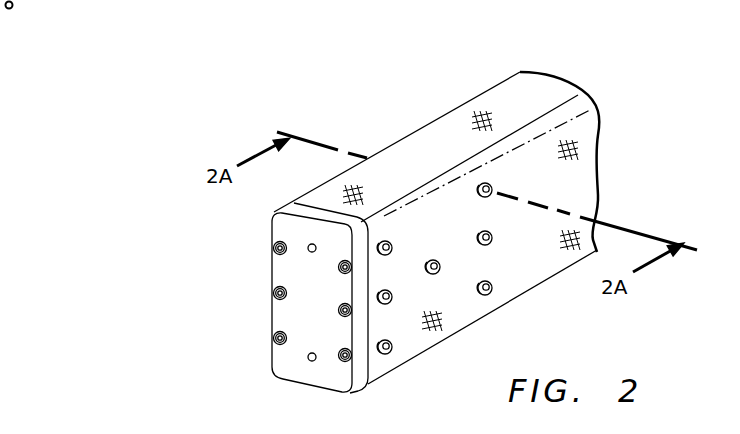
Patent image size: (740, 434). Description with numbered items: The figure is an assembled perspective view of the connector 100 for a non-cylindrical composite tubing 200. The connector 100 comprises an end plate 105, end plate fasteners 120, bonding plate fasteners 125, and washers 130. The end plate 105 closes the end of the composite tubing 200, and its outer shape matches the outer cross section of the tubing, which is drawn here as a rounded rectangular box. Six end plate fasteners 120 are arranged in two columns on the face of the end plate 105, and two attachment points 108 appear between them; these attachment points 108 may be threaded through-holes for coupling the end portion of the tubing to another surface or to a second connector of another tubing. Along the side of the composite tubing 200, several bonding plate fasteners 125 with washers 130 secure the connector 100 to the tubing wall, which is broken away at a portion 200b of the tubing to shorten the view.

The connector 100 is at (192, 220).
The end plate 105 is at (268, 276).
The attachment points 108 is at (312, 244).
The end plate fasteners 120 is at (339, 266).
The bonding plate fasteners 125 is at (399, 247).
The washers 130 is at (384, 256).
The composite tubing 200 is at (413, 125).
The housing side wall portion 200b is at (580, 160).